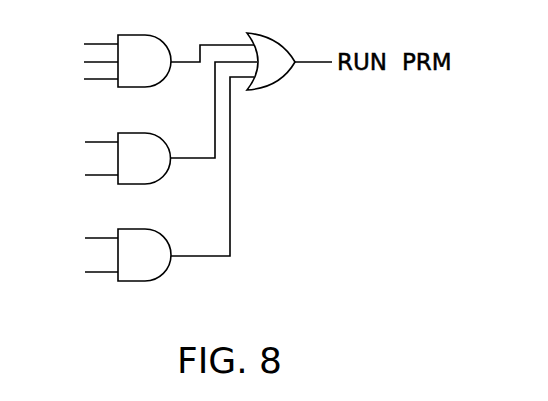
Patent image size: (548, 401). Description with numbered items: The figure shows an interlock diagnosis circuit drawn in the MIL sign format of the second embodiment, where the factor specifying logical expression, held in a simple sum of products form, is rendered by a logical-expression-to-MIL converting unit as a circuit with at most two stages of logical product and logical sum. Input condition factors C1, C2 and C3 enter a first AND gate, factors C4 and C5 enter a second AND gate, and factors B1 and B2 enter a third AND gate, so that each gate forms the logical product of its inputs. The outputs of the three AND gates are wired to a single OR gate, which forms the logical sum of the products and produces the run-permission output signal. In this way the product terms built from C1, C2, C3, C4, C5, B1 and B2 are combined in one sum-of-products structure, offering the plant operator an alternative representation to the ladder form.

The logical factor C1 is at (81, 40).
The logical factor C2 is at (81, 57).
The condition input C3 is at (81, 73).
The logical factor C4 is at (81, 142).
The logical factor C5 is at (81, 175).
The logical factor B1 is at (81, 238).
The logical factor B2 is at (81, 272).